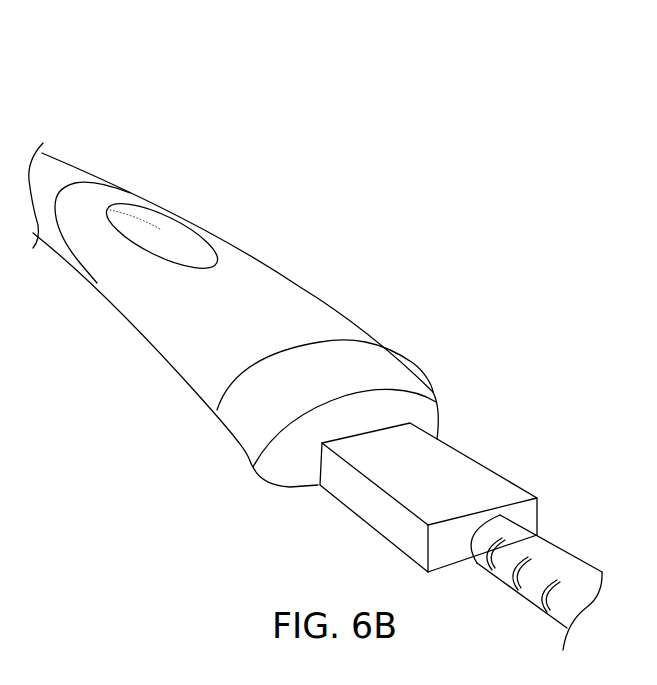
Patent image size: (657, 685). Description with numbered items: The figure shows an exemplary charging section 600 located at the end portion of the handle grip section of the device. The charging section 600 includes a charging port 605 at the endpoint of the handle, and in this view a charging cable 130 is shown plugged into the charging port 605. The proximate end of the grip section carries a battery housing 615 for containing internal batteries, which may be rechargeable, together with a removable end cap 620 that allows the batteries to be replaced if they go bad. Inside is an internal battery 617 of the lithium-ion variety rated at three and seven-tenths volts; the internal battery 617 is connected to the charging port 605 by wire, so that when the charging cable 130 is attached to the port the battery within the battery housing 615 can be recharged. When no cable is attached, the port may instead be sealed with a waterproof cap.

The charging section 600 is at (315, 342).
The battery housing 615 is at (312, 303).
The internal battery 617 is at (372, 367).
The removable end cap 620 is at (230, 438).
The charging port 605 is at (320, 470).
The charging cable 130 is at (453, 480).